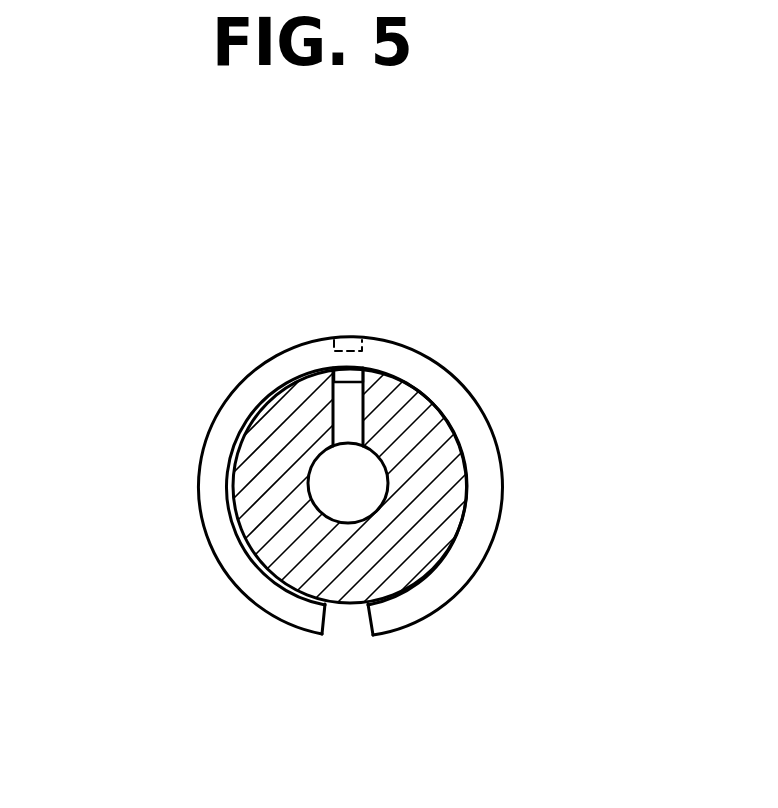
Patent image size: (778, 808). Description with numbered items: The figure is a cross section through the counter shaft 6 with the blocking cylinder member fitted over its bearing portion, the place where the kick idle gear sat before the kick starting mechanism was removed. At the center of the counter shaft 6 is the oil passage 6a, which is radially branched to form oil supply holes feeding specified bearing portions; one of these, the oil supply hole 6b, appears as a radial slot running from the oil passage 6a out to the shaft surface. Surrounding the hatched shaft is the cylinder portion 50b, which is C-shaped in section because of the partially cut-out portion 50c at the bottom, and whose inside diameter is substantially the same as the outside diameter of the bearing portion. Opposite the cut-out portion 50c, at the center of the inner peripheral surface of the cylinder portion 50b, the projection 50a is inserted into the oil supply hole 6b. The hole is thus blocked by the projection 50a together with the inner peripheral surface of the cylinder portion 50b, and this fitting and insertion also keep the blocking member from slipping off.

The counter shaft 6 is at (440, 512).
The oil passage 6a is at (383, 487).
The oil supply hole 6b is at (362, 417).
The projection 50a is at (352, 375).
The cylinder portion 50b is at (203, 434).
The cut-out portion 50c is at (353, 650).